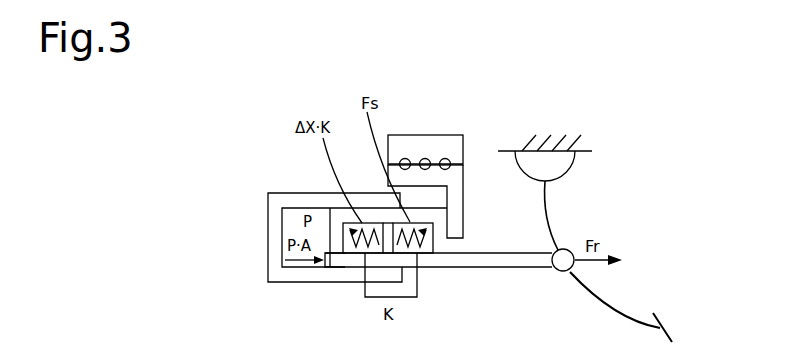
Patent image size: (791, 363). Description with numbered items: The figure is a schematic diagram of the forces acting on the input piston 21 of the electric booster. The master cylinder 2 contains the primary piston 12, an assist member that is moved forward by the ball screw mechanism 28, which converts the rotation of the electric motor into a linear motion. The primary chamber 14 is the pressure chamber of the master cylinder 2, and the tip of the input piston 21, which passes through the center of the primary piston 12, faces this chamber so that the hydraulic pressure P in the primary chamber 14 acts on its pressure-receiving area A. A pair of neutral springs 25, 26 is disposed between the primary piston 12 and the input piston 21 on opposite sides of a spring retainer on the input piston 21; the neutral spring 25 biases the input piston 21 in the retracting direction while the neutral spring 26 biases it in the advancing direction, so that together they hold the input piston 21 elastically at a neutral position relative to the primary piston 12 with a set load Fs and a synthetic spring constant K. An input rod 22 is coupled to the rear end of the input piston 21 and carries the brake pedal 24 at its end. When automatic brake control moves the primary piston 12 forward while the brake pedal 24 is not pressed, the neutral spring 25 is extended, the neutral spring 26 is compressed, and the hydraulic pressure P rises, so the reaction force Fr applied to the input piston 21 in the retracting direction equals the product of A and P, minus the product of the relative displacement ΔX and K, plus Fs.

The master cylinder 2 is at (287, 198).
The primary chamber 14 is at (282, 222).
The primary piston 12 is at (425, 222).
The ball screw mechanism 28 is at (452, 150).
The input piston 21 is at (337, 262).
The neutral spring 25 is at (358, 253).
The neutral spring 26 is at (425, 253).
The input rod 22 is at (527, 267).
The brake pedal 24 is at (667, 327).